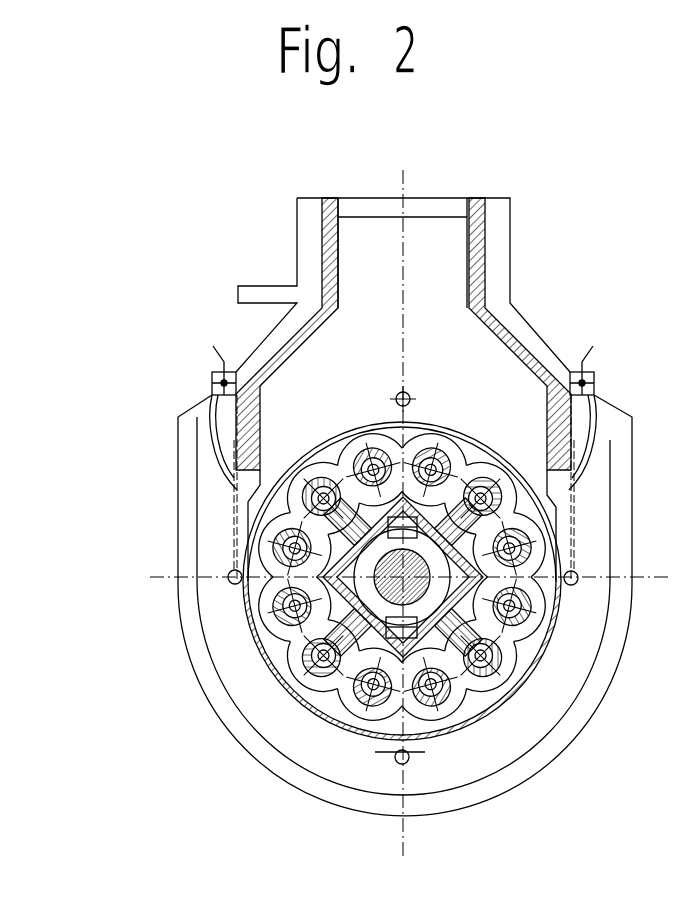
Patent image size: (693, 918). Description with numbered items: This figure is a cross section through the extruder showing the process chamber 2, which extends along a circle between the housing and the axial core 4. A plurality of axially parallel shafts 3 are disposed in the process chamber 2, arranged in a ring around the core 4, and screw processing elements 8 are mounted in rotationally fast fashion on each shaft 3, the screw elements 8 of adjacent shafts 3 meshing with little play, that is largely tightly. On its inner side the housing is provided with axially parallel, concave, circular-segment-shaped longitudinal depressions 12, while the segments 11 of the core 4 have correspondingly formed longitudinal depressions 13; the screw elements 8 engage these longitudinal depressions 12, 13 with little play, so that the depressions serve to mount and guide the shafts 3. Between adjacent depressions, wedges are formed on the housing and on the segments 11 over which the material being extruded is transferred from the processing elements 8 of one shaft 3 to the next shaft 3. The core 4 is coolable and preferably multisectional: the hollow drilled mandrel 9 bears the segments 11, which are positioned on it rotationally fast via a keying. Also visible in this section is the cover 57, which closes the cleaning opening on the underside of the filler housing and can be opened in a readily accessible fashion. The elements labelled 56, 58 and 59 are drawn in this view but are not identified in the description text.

The process chamber 2 is at (420, 514).
The shaft 3 is at (497, 692).
The axial core 4 is at (578, 550).
The screw elements 8 is at (296, 712).
The hollow drilled mandrel 9 is at (640, 489).
The segments 11 is at (268, 668).
The longitudinal depressions 12 is at (296, 560).
The longitudinal depressions 13 is at (297, 605).
The housing lower part 56 is at (549, 710).
The cover 57 is at (423, 753).
The clamp 58 is at (207, 417).
The clamp 59 is at (607, 420).